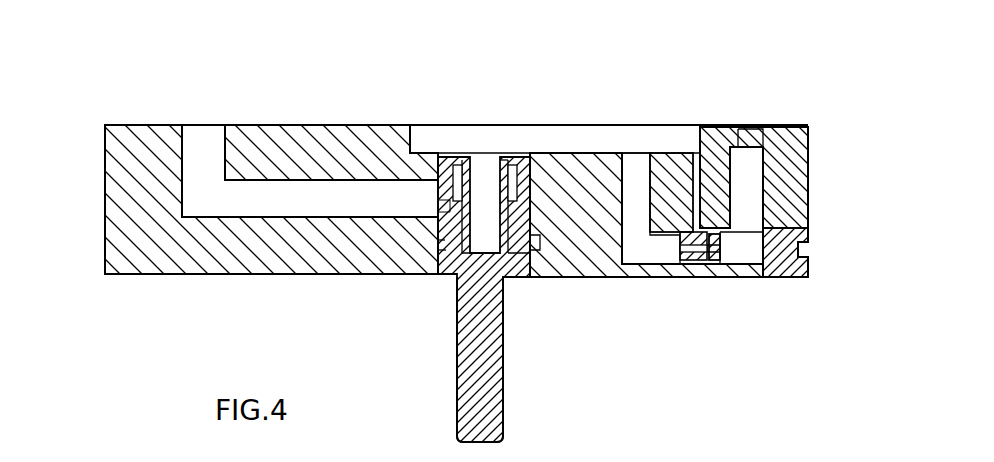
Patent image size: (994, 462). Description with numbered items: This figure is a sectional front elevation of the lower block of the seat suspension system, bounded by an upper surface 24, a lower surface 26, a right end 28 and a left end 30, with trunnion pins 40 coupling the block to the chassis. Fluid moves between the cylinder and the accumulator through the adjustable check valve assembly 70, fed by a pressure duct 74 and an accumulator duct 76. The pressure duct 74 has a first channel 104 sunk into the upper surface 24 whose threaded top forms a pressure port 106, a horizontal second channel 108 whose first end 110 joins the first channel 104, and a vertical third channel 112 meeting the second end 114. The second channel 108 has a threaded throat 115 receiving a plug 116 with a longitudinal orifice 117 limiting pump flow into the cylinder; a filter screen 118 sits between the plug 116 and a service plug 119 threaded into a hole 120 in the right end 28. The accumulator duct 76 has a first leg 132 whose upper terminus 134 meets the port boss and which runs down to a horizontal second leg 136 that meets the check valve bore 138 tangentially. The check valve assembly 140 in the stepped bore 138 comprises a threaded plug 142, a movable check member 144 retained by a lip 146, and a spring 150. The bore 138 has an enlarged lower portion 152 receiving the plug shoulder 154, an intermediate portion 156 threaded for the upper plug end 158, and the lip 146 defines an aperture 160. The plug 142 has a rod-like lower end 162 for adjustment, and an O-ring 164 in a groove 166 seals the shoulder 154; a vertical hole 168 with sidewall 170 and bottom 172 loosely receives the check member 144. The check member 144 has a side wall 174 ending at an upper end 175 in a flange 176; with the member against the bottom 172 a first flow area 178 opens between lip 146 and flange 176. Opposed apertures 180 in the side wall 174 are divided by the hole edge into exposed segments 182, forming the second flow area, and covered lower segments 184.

The upper surface 24 is at (276, 125).
The lower surface 26 is at (127, 276).
The right end 28 is at (812, 137).
The left end 30 is at (105, 251).
The trunnion pins 40 is at (437, 157).
The adjustable check valve assembly 70 is at (416, 292).
The pressure duct 74 is at (636, 262).
The accumulator duct 76 is at (257, 236).
The first channel 104 is at (753, 170).
The pressure port 106 is at (762, 128).
The second channel 108 is at (667, 277).
The first end 110 is at (750, 262).
The third channel 112 is at (604, 153).
The second end 114 is at (625, 277).
The threaded throat 115 is at (684, 232).
The plug 116 is at (693, 264).
The orifice 117 is at (686, 226).
The filter screen 118 is at (733, 264).
The service plug 119 is at (810, 265).
The hole 120 is at (788, 277).
The first leg 132 is at (180, 178).
The upper terminus 134 is at (180, 130).
The second leg 136 is at (178, 276).
The check valve bore 138 is at (362, 268).
The check valve assembly 140 is at (515, 298).
The threaded plug 142 is at (445, 338).
The check member 144 is at (440, 268).
The lip 146 is at (532, 158).
The spring 150 is at (540, 162).
The lower portion 152 is at (438, 255).
The shoulder 154 is at (602, 277).
The intermediate portion 156 is at (450, 210).
The upper plug end 158 is at (537, 214).
The aperture 160 is at (456, 165).
The lower end 162 is at (500, 420).
The O-ring 164 is at (440, 262).
The groove 166 is at (535, 249).
The hole 168 is at (442, 322).
The sidewall 170 is at (535, 275).
The bottom 172 is at (422, 289).
The side wall 174 is at (443, 185).
The upper end 175 is at (503, 158).
The flange 176 is at (478, 160).
The first flow area 178 is at (450, 170).
The apertures 180 is at (530, 283).
The exposed segments 182 is at (450, 193).
The lower segments 184 is at (440, 232).